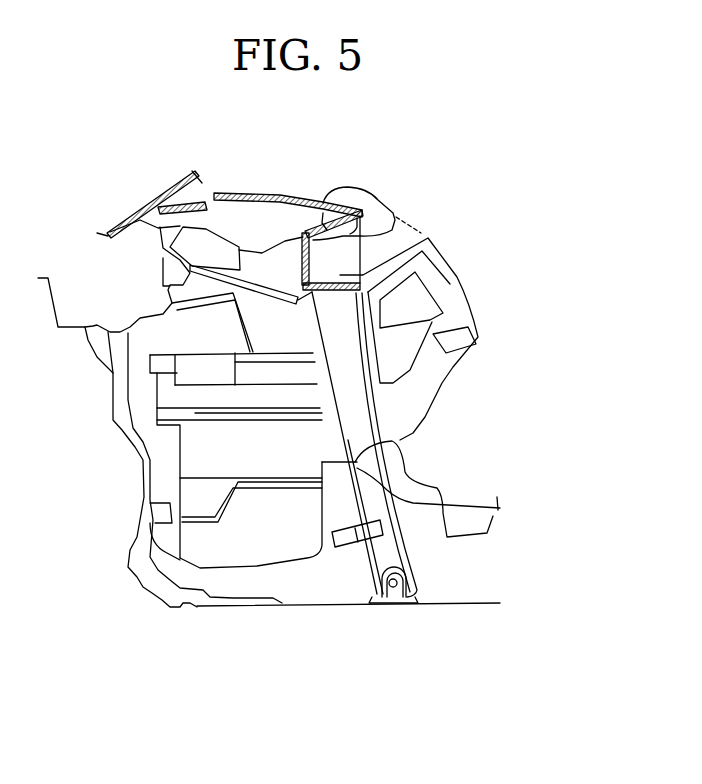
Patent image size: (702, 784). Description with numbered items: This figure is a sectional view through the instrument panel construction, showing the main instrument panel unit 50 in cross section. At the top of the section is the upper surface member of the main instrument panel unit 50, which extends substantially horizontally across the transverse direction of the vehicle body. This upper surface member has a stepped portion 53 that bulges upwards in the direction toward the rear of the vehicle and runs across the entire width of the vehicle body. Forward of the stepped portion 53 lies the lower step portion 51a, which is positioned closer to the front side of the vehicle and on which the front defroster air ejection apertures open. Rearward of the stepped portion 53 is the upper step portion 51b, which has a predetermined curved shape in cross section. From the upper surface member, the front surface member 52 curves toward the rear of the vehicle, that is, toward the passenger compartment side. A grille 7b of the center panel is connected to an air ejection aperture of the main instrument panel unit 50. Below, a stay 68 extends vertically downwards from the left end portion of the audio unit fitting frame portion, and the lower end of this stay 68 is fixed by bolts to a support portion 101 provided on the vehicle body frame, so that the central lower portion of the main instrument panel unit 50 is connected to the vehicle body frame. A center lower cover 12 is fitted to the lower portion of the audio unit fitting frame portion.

The main instrument panel unit 50 is at (292, 196).
The lower step portion 51a is at (178, 183).
The upper step portion 51b is at (322, 201).
The front surface member 52 is at (350, 188).
The stepped portion 53 is at (253, 192).
The grille 7b is at (418, 226).
The center lower cover 12 is at (453, 367).
The stay 68 is at (418, 570).
The support portion 101 is at (401, 594).